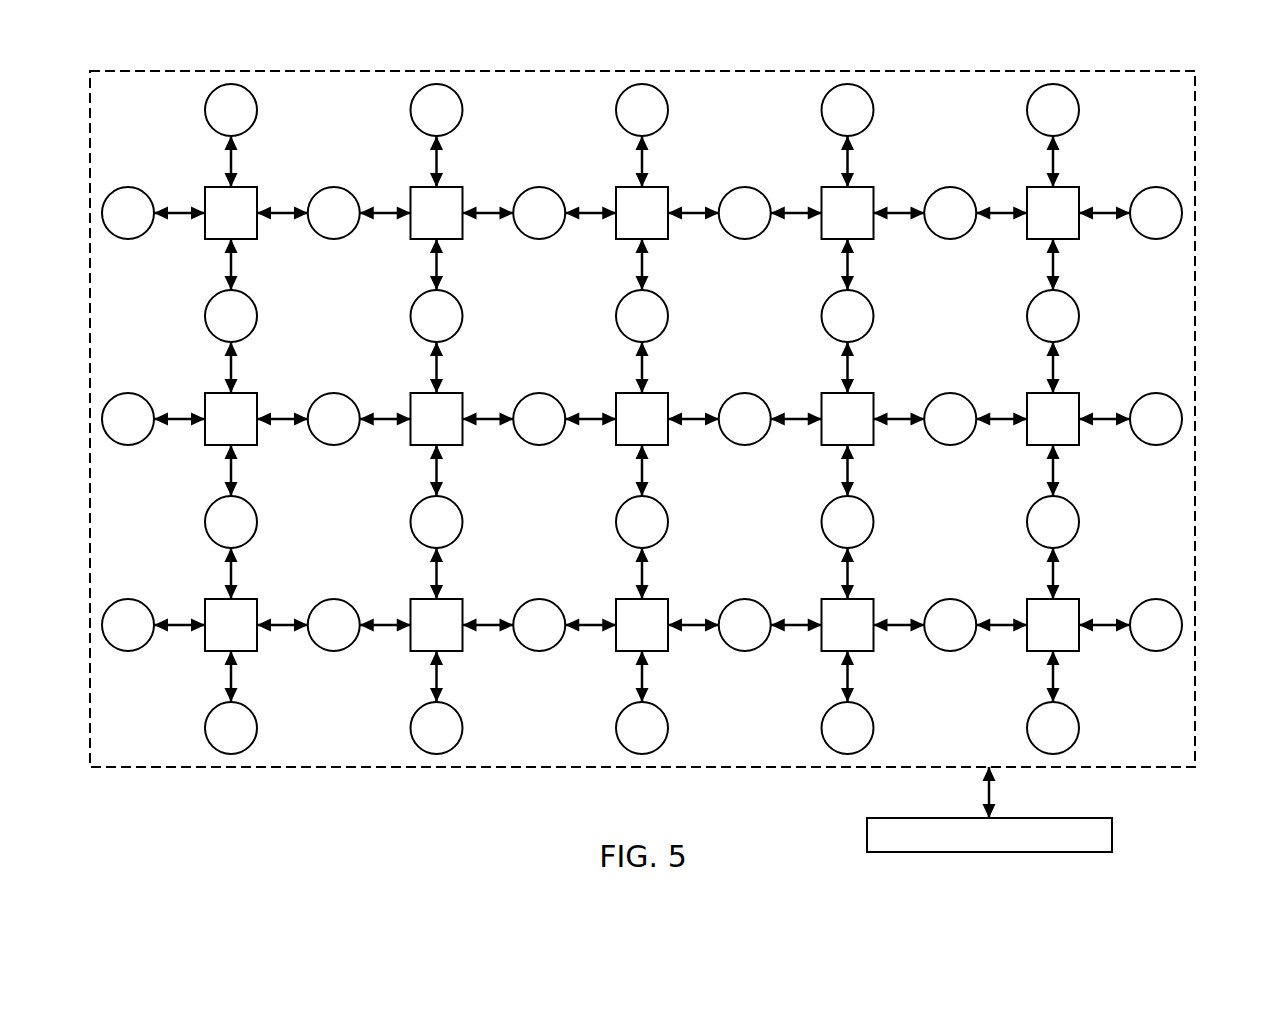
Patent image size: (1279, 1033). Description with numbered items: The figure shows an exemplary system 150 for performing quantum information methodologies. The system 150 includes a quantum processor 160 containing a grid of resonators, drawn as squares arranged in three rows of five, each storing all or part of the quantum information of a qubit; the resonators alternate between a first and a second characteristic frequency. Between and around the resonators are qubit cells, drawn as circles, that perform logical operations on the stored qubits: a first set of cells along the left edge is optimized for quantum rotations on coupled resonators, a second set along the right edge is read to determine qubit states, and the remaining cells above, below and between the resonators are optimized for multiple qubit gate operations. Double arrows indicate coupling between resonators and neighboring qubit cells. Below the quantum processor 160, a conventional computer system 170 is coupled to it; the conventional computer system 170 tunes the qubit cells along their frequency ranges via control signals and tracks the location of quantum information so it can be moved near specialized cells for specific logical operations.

The system 150 is at (1150, 52).
The quantum processor 160 is at (642, 419).
The conventional computer system 170 is at (1022, 817).